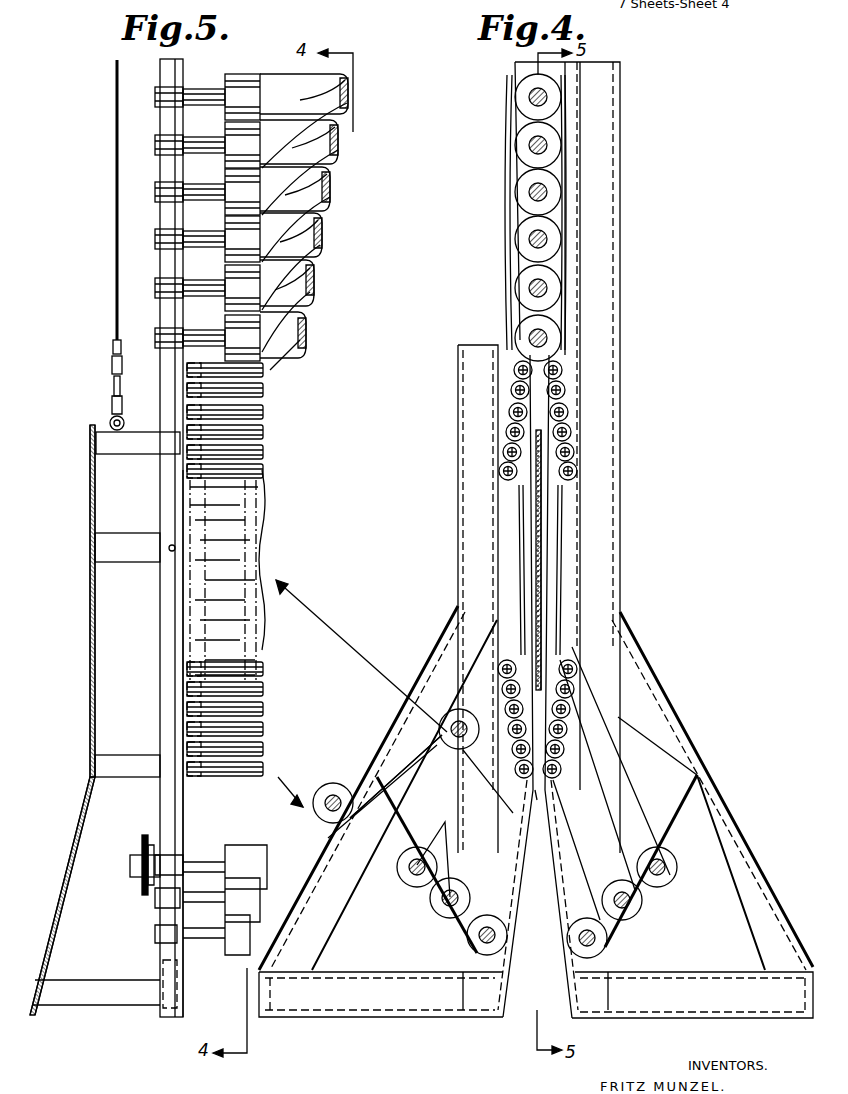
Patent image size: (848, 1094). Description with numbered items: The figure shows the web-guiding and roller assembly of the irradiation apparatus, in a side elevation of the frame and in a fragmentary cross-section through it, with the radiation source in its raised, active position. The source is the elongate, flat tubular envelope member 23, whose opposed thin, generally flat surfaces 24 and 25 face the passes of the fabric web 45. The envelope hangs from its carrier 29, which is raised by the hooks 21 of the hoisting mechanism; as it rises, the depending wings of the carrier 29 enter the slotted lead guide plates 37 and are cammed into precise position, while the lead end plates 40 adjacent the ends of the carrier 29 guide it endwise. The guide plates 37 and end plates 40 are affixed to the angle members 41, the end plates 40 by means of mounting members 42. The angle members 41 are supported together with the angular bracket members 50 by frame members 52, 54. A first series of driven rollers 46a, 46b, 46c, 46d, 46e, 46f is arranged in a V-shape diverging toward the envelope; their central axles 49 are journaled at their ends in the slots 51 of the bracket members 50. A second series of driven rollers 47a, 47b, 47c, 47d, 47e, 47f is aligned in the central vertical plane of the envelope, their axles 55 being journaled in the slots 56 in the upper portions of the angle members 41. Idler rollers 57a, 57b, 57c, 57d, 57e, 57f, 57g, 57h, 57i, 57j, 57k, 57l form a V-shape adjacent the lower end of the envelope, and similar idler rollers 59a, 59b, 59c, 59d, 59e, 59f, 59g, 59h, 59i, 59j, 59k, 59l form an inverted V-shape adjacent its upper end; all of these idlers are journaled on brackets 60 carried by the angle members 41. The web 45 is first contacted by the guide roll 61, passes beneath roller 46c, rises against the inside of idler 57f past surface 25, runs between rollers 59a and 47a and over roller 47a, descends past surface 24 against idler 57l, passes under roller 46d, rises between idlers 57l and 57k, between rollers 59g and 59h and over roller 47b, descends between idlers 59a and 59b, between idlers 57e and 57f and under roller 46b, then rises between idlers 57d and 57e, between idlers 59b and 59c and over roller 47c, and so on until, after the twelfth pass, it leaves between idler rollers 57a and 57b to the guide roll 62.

In FIG. 5, the hooks 21 is at (113, 420).
In FIG. 4, the tubular envelope member 23 is at (545, 572).
In FIG. 4, the flat surface 24 is at (545, 535).
In FIG. 4, the flat surface 25 is at (535, 525).
In FIG. 5, the carrier 29 is at (100, 440).
In FIG. 4, the lead guide plates 37 is at (540, 875).
In FIG. 5, the lead end plates 40 is at (90, 637).
In FIG. 5, the angle members 41 is at (183, 65).
In FIG. 4, the angle members 41 is at (618, 273).
In FIG. 5, the mounting members 42 is at (103, 545).
In FIG. 5, the fabric web 45 is at (277, 74).
In FIG. 4, the fabric web 45 is at (361, 787).
In FIG. 4, the driven roller 46a is at (410, 878).
In FIG. 4, the driven roller 46b is at (445, 905).
In FIG. 4, the driven roller 46c is at (470, 950).
In FIG. 4, the driven roller 46d is at (593, 942).
In FIG. 4, the driven roller 46e is at (638, 907).
In FIG. 4, the driven roller 46f is at (666, 870).
In FIG. 4, the driven roller 47a is at (518, 337).
In FIG. 4, the driven roller 47b is at (525, 290).
In FIG. 4, the driven roller 47c is at (525, 240).
In FIG. 4, the driven roller 47d is at (525, 193).
In FIG. 4, the driven roller 47e is at (525, 145).
In FIG. 4, the driven roller 47f is at (525, 97).
In FIG. 5, the axles 49 is at (205, 860).
In FIG. 4, the axles 49 is at (437, 849).
In FIG. 5, the angular bracket members 50 is at (188, 816).
In FIG. 4, the angular bracket members 50 is at (438, 765).
In FIG. 4, the slots 51 is at (630, 850).
In FIG. 4, the frame member 52 is at (320, 873).
In FIG. 4, the frame member 54 is at (385, 1010).
In FIG. 5, the axles 55 is at (222, 143).
In FIG. 4, the axles 55 is at (528, 275).
In FIG. 4, the slots 56 is at (515, 210).
In FIG. 4, the idler roller 57a is at (500, 665).
In FIG. 4, the idler roller 57b is at (505, 686).
In FIG. 4, the idler roller 57c is at (508, 706).
In FIG. 4, the idler roller 57d is at (510, 727).
In FIG. 4, the idler roller 57e is at (512, 748).
In FIG. 4, the idler roller 57f is at (517, 769).
In FIG. 4, the idler roller 57g is at (577, 665).
In FIG. 4, the idler roller 57h is at (574, 686).
In FIG. 4, the idler roller 57i is at (570, 706).
In FIG. 4, the idler roller 57j is at (567, 727).
In FIG. 4, the idler roller 57k is at (564, 748).
In FIG. 4, the idler roller 57l is at (561, 768).
In FIG. 4, the idler roller 59a is at (512, 362).
In FIG. 4, the idler roller 59b is at (510, 382).
In FIG. 4, the idler roller 59c is at (508, 402).
In FIG. 4, the idler roller 59d is at (505, 422).
In FIG. 4, the idler roller 59e is at (502, 442).
In FIG. 4, the idler roller 59f is at (498, 462).
In FIG. 4, the idler roller 59g is at (563, 362).
In FIG. 4, the idler roller 59h is at (566, 382).
In FIG. 4, the idler roller 59i is at (569, 402).
In FIG. 4, the idler roller 59j is at (572, 422).
In FIG. 4, the idler roller 59k is at (575, 442).
In FIG. 4, the idler roller 59l is at (578, 462).
In FIG. 5, the brackets 60 is at (188, 368).
In FIG. 4, the guide roll 61 is at (327, 793).
In FIG. 4, the guide roll 62 is at (440, 718).